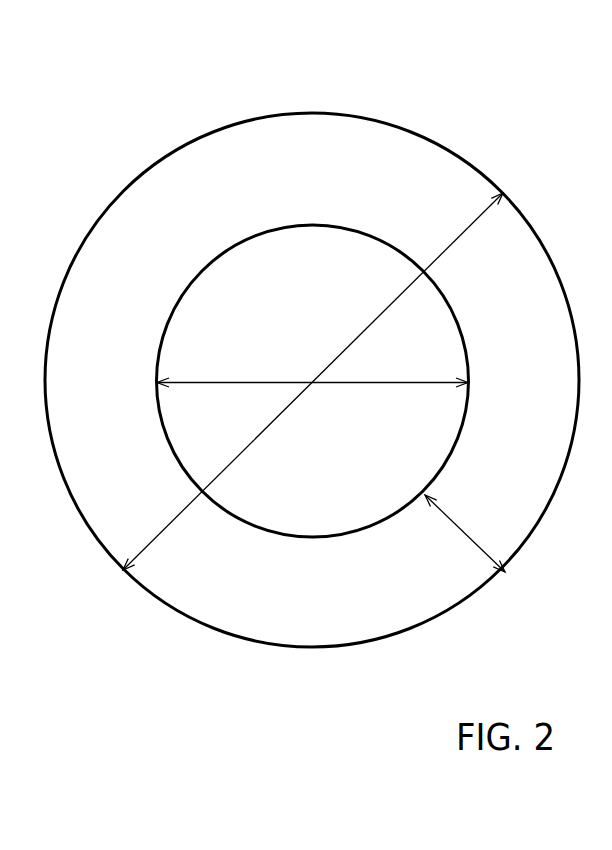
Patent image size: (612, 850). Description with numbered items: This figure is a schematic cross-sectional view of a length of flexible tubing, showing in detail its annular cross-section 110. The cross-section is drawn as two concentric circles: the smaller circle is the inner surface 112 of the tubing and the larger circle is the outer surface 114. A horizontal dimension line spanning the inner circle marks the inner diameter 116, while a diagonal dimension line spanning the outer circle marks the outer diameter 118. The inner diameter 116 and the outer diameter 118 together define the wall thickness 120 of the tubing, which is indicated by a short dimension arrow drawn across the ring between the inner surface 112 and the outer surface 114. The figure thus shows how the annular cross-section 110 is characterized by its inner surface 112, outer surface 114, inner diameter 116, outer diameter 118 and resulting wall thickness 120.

The annular cross-section 110 is at (312, 325).
The inner surface 112 is at (273, 235).
The outer surface 114 is at (402, 125).
The inner diameter 116 is at (312, 372).
The outer diameter 118 is at (313, 381).
The wall thickness 120 is at (465, 533).